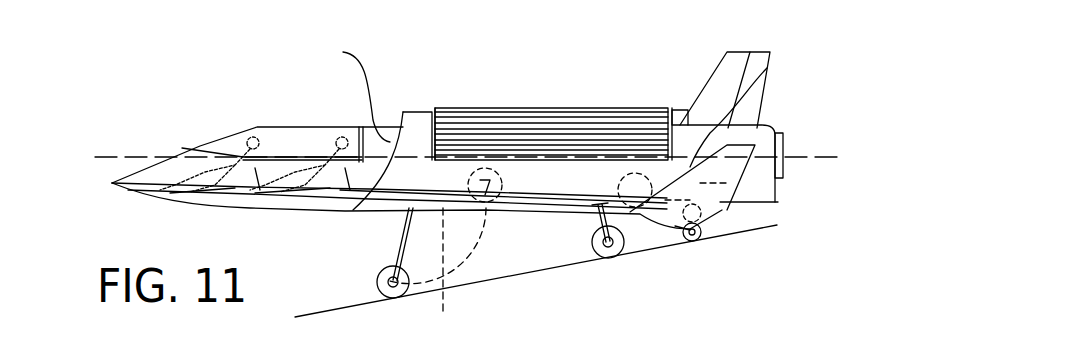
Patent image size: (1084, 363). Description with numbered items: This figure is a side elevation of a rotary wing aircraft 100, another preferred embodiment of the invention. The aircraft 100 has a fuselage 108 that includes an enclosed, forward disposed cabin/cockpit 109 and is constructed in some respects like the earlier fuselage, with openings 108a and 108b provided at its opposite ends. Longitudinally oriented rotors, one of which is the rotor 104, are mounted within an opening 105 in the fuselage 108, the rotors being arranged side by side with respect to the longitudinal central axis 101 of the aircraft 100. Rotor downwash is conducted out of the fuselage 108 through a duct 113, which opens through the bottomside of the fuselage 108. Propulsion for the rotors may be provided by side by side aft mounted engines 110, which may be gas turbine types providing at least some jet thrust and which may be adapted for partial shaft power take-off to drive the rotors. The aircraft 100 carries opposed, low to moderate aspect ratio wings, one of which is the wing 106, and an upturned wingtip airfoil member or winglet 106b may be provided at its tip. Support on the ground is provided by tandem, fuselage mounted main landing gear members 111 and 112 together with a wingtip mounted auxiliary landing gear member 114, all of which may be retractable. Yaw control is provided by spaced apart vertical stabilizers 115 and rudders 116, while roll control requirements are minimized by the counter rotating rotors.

The rotary wing aircraft 100 is at (878, 118).
The longitudinal central axis 101 is at (104, 156).
The rotor 104 is at (553, 108).
The opening 105 is at (446, 148).
The wing 106 is at (530, 202).
The winglet 106b is at (777, 166).
The fuselage 108 is at (412, 93).
The opening 108a is at (335, 89).
The opening 108b is at (767, 68).
The cabin/cockpit 109 is at (300, 127).
The engine 110 is at (772, 178).
The main landing gear member 111 is at (403, 230).
The main landing gear member 112 is at (597, 228).
The duct 113 is at (438, 275).
The auxiliary landing gear member 114 is at (698, 240).
The vertical stabilizer 115 is at (700, 75).
The rudder 116 is at (757, 102).